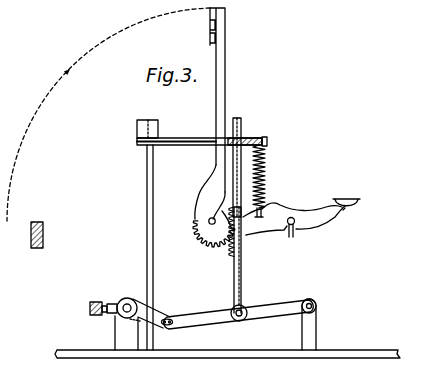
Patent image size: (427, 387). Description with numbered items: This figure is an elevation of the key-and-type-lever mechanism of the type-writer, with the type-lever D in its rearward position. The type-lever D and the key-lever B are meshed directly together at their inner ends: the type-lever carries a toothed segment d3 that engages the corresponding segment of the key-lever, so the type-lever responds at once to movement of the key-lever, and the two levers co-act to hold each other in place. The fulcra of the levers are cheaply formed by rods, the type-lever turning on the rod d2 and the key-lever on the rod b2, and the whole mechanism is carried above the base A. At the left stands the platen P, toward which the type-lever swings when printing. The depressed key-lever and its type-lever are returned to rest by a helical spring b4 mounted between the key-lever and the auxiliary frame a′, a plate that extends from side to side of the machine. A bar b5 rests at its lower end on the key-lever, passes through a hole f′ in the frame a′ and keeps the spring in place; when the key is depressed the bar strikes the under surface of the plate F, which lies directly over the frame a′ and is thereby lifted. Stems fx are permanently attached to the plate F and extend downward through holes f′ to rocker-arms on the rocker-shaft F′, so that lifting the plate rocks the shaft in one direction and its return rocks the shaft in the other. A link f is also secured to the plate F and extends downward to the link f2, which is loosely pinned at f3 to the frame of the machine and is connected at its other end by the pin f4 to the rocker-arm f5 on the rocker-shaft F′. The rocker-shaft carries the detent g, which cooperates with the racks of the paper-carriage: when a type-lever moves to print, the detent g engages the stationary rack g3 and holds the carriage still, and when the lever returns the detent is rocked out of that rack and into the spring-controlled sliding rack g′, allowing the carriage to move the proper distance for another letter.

The vertical rod D is at (225, 37).
The fulcrum rod d2 is at (209, 219).
The toothed segment d3 is at (214, 237).
The auxiliary frame a′ is at (267, 142).
The stems fx is at (153, 232).
The plate F is at (243, 137).
The spring b4 is at (266, 179).
The bar b5 is at (266, 207).
The fulcrum rod b2 is at (292, 237).
The weight B is at (346, 196).
The link f is at (241, 283).
The holes f′ is at (243, 240).
The link f2 is at (263, 323).
The pivot pin f3 is at (318, 305).
The pin f4 is at (168, 327).
The rocker-arm f5 is at (156, 326).
The rocker-shaft F′ is at (125, 298).
The detent g is at (112, 300).
The sliding rack g′ is at (90, 308).
The stationary rack g3 is at (93, 316).
The base A is at (227, 347).
The plate P is at (27, 235).